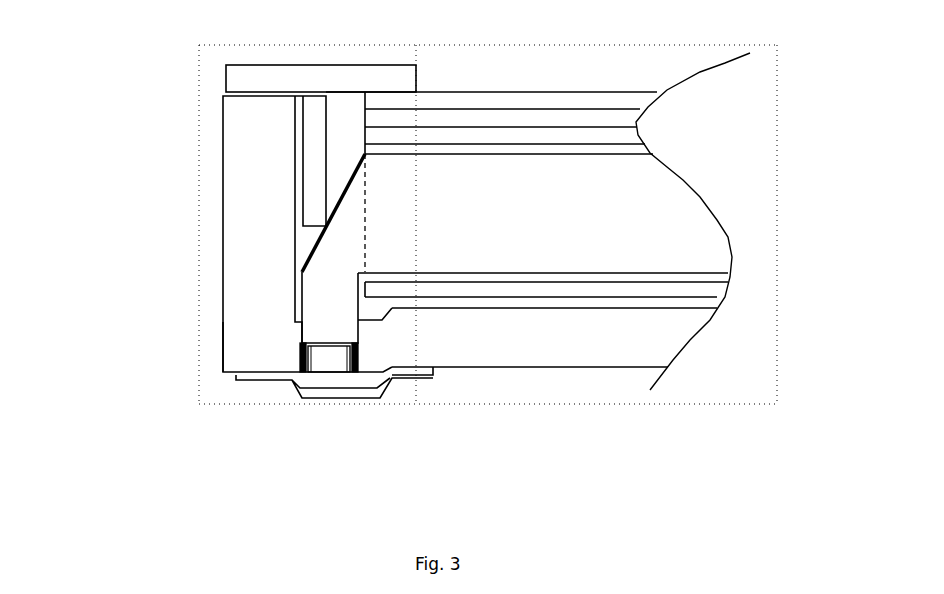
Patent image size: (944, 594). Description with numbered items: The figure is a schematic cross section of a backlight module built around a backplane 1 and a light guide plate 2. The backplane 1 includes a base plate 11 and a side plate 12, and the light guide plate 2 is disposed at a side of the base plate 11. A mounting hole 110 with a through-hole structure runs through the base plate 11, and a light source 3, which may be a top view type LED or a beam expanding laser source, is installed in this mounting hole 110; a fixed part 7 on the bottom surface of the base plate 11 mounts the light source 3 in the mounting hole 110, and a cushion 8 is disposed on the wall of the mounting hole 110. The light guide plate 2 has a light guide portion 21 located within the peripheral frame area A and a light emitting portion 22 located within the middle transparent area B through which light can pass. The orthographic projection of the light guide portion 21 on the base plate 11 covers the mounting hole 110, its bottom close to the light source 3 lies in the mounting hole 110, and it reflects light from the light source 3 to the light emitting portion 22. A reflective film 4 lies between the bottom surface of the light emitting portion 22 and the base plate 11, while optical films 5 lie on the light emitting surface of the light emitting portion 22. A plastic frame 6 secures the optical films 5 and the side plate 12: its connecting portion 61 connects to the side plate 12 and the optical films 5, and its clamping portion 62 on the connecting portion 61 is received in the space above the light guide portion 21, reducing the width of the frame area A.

The backplane 1 is at (445, 409).
The base plate 11 is at (530, 406).
The side plate 12 is at (277, 362).
The mounting hole 110 is at (357, 373).
The light guide plate 2 is at (476, 207).
The light guide portion 21 is at (320, 288).
The light emitting portion 22 is at (707, 235).
The light source 3 is at (318, 348).
The reflective film 4 is at (713, 288).
The optical films 5 is at (636, 122).
The plastic frame 6 is at (230, 192).
The connecting portion 61 is at (240, 73).
The clamping portion 62 is at (312, 164).
The fixed part 7 is at (236, 375).
The cushion 8 is at (300, 358).
The frame area A is at (200, 200).
The transparent area B is at (777, 170).